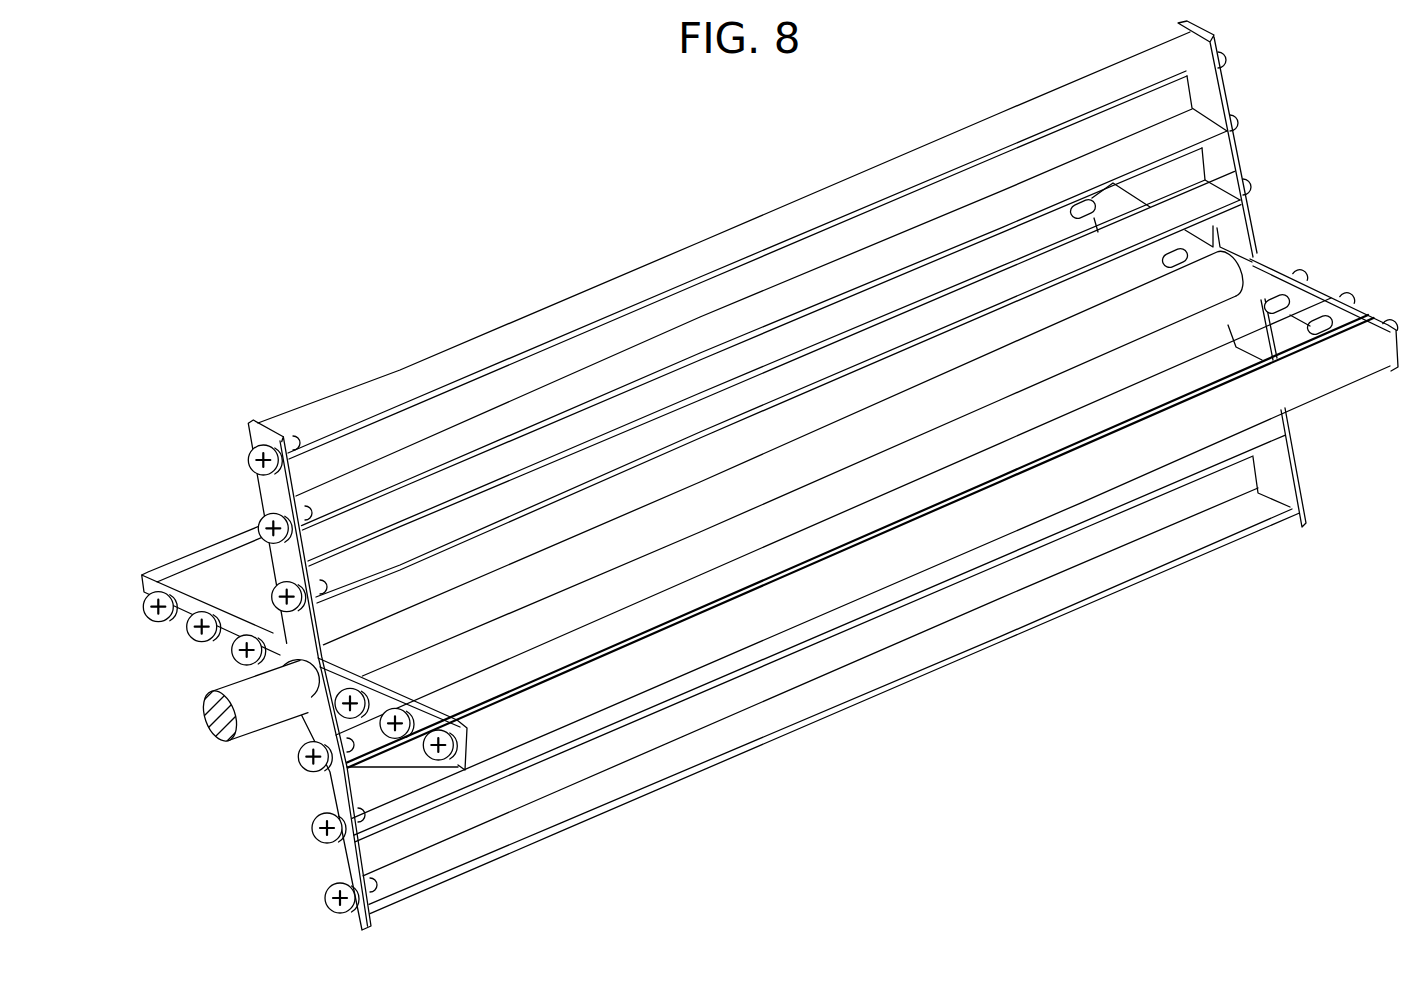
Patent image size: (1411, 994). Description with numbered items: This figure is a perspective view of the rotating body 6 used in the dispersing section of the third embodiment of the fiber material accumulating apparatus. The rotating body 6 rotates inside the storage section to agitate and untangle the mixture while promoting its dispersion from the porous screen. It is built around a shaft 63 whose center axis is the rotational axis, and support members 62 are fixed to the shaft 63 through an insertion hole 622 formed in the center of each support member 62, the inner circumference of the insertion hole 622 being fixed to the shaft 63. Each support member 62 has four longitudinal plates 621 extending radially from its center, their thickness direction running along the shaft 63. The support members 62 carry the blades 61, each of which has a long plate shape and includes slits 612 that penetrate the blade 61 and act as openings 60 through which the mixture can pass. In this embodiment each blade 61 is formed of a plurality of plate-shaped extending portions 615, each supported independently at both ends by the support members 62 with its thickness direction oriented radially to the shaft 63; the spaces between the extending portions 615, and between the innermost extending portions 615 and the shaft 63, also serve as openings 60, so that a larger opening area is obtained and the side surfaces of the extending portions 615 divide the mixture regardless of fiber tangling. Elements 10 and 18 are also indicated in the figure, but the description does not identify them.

The rotating body 6 is at (716, 475).
The image forming apparatus 10 is at (716, 475).
The conveyance guide 18 is at (716, 475).
The openings 60 is at (505, 805).
The blade 61 is at (716, 475).
The support member 62 is at (318, 858).
The shaft 63 is at (1012, 358).
The slit 612 is at (833, 604).
The extending portion 615 is at (748, 722).
The longitudinal plate 621 is at (143, 627).
The insertion hole 622 is at (298, 712).